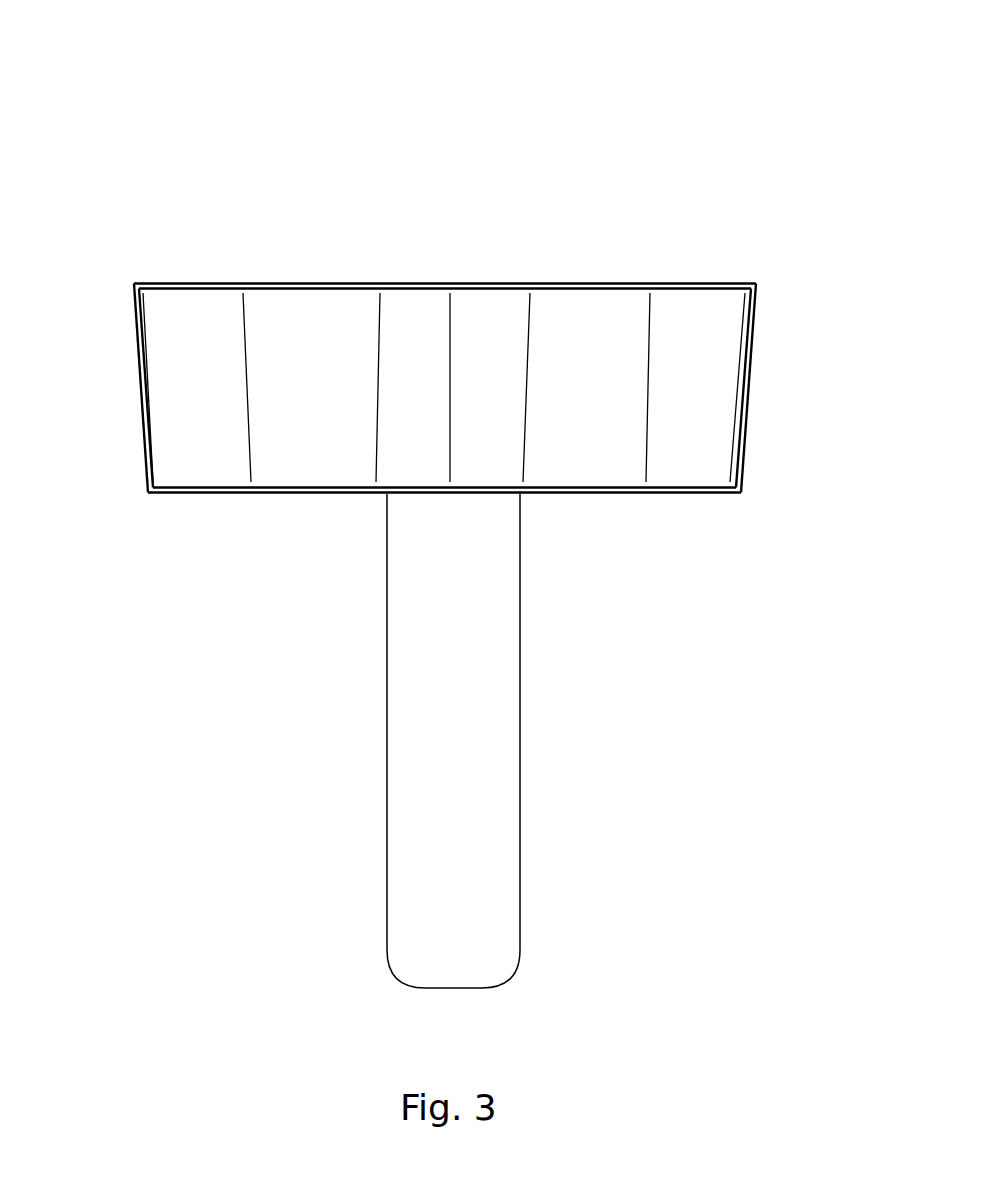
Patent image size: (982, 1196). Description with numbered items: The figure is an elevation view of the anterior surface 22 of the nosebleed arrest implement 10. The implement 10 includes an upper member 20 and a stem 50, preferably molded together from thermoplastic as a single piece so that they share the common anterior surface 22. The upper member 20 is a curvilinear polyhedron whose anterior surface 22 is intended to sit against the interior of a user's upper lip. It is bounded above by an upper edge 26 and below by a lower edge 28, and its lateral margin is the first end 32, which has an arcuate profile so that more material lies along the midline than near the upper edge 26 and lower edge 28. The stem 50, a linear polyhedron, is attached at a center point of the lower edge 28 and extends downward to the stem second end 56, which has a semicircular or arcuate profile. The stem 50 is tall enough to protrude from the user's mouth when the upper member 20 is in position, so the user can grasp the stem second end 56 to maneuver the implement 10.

The nosebleed arrest implement 10 is at (441, 494).
The upper member 20 is at (500, 362).
The anterior surface 22 is at (598, 320).
The upper edge 26 is at (418, 281).
The lower edge 28 is at (313, 495).
The first end 32 is at (748, 412).
The stem 50 is at (505, 741).
The stem second end 56 is at (495, 935).